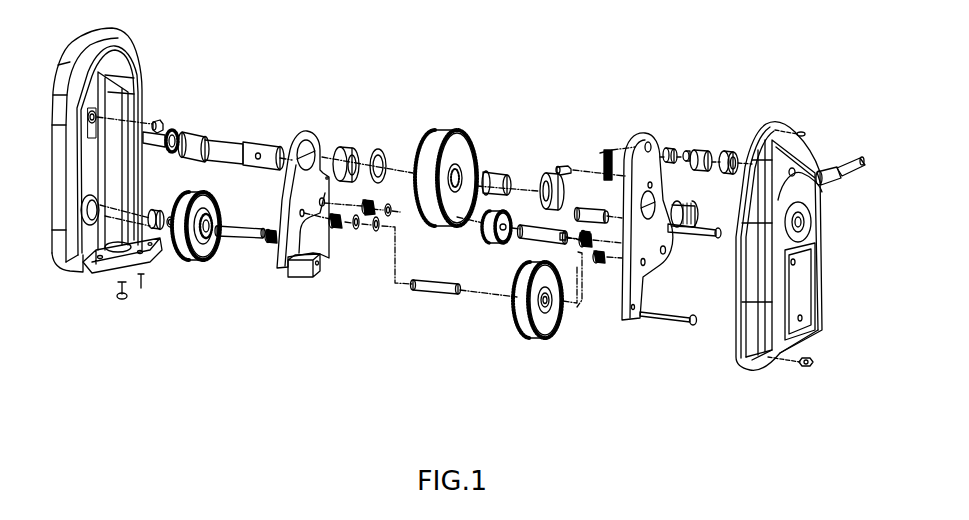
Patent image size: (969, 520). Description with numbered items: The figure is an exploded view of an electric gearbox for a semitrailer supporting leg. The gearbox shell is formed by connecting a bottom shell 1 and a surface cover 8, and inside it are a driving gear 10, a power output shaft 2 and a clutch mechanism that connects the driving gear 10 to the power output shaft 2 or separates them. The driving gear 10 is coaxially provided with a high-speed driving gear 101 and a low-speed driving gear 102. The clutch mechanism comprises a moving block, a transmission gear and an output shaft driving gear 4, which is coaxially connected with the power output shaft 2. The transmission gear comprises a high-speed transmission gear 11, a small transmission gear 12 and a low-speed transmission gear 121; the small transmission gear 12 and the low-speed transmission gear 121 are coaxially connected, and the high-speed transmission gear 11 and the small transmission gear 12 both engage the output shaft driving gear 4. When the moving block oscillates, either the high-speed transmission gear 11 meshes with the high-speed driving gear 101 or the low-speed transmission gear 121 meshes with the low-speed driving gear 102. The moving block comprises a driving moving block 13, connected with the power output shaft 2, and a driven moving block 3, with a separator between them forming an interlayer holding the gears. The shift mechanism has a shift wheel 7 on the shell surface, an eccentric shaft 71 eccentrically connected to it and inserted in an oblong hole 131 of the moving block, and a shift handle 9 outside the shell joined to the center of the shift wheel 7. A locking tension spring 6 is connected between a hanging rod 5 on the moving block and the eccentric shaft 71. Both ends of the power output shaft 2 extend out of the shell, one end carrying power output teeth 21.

The bottom shell 1 is at (105, 32).
The power output teeth 21 is at (176, 129).
The power output shaft 2 is at (240, 137).
The driven moving block 3 is at (306, 128).
The output shaft driving gear 4 is at (457, 142).
The hanging rod 5 is at (568, 168).
The locking tension spring 6 is at (608, 150).
The oblong hole 131 is at (648, 138).
The driving moving block 13 is at (630, 317).
The eccentric shaft 71 is at (685, 152).
The shift wheel 7 is at (708, 155).
The surface cover 8 is at (753, 130).
The shift handle 9 is at (857, 167).
The driving gear 10 is at (197, 260).
The high-speed driving gear 101 is at (178, 243).
The low-speed driving gear 102 is at (205, 260).
The high-speed transmission gear 11 is at (492, 245).
The small transmission gear 12 is at (518, 305).
The low-speed transmission gear 121 is at (547, 337).